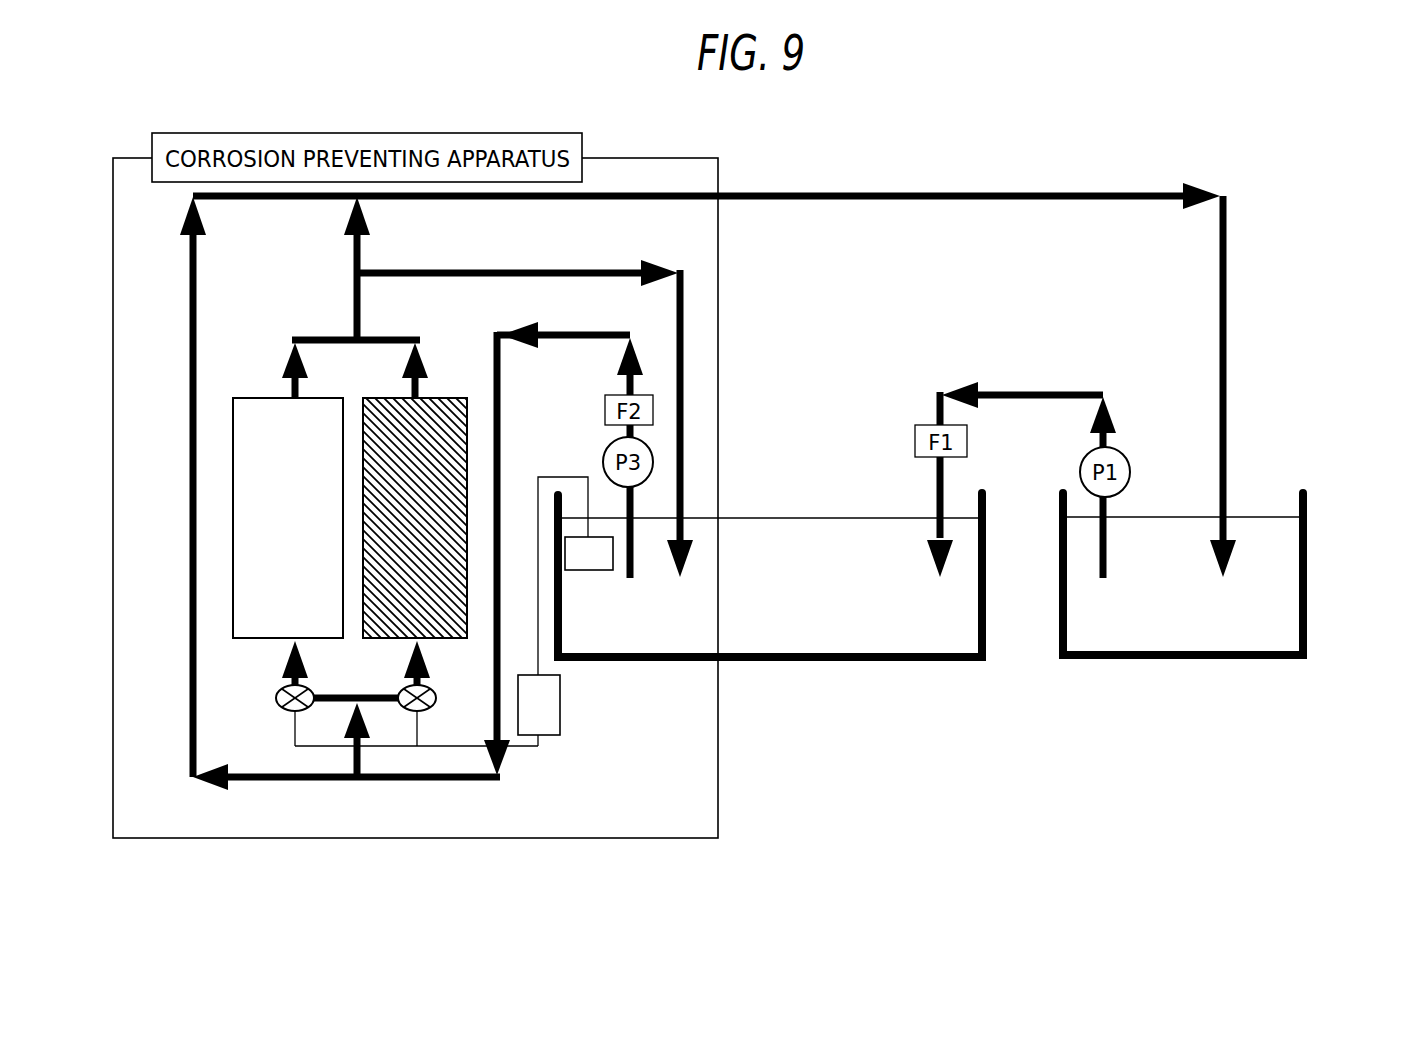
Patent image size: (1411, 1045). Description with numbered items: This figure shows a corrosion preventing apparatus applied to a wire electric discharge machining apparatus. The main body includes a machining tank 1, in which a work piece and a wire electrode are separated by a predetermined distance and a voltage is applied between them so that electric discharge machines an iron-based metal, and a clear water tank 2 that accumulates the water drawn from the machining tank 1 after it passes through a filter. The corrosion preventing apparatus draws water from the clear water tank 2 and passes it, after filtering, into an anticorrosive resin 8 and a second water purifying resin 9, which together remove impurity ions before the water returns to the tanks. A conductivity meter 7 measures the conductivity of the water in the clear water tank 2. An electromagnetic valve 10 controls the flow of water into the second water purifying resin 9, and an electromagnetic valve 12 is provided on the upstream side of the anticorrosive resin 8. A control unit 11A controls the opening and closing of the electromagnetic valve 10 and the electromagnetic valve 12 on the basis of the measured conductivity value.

The machining tank 1 is at (1142, 648).
The clear water tank 2 is at (823, 648).
The conductivity meter 7 is at (613, 572).
The anticorrosive resin 8 is at (447, 394).
The second water purifying resin 9 is at (276, 408).
The electromagnetic valve 10 is at (277, 705).
The control unit 11A is at (540, 747).
The electromagnetic valve 12 is at (434, 705).